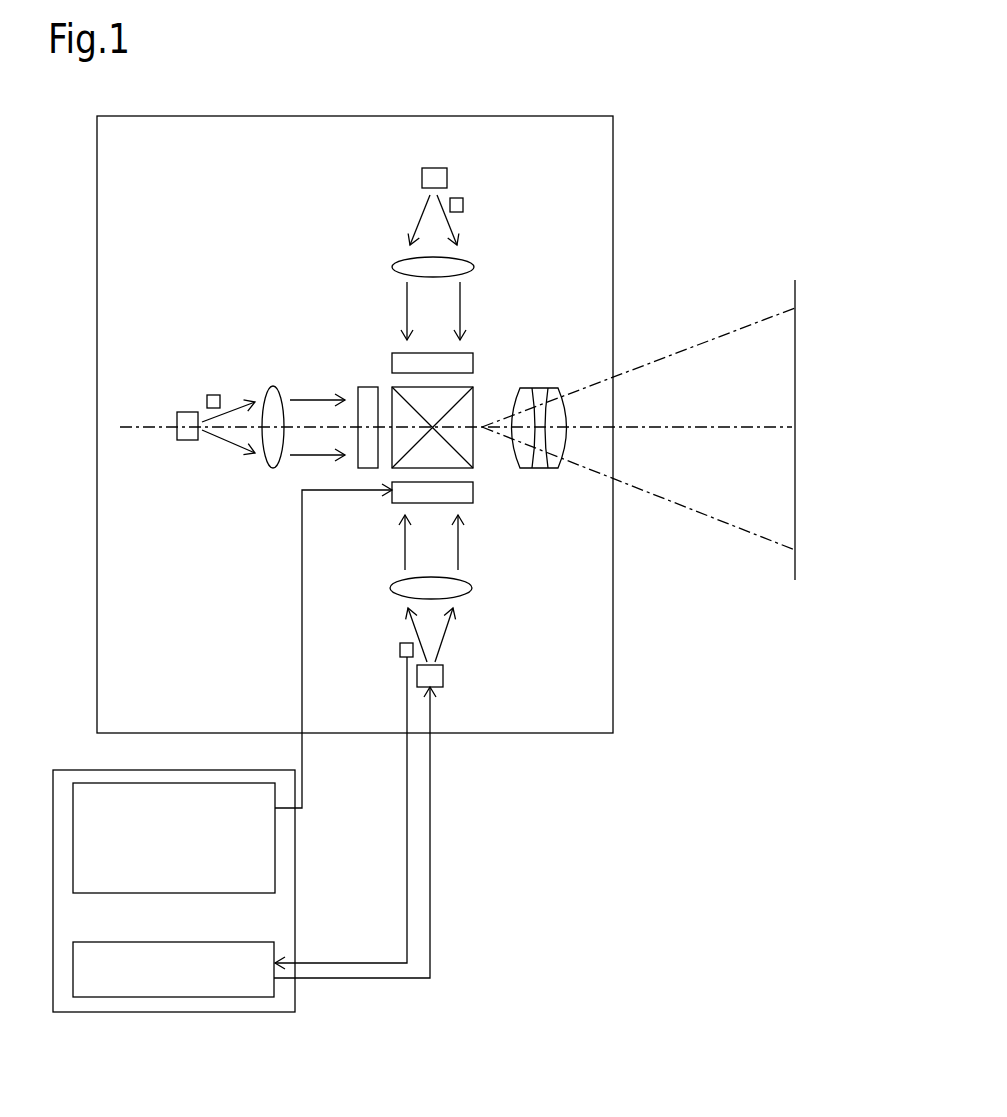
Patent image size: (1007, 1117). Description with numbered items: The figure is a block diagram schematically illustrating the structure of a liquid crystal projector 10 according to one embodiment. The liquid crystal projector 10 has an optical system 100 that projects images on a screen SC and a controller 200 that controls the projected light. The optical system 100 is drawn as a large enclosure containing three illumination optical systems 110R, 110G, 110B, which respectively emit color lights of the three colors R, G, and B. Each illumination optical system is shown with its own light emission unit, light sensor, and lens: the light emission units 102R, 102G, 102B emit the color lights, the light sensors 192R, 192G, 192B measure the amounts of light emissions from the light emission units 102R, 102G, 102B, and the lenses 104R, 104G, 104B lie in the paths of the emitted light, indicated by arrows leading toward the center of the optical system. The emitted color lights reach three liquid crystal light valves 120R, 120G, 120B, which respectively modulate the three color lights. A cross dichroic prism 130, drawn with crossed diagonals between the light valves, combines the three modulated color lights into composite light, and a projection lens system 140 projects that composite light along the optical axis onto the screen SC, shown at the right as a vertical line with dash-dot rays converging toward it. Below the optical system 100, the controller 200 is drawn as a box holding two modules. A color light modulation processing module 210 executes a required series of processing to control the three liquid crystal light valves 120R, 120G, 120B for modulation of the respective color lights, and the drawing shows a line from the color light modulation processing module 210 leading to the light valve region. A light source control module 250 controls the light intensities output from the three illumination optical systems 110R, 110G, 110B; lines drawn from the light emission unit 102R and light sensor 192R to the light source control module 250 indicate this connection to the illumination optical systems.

The liquid crystal projector 10 is at (643, 932).
The optical system 100 is at (503, 735).
The screen SC is at (795, 280).
The projection lens system 140 is at (528, 387).
The cross dichroic prism 130 is at (473, 468).
The liquid crystal light valve 120B is at (460, 352).
The liquid crystal light valve 120G is at (358, 400).
The liquid crystal light valve 120R is at (460, 503).
The illumination optical system 110B is at (440, 235).
The illumination optical system 110G is at (224, 420).
The illumination optical system 110R is at (437, 623).
The light emission unit 102B is at (422, 172).
The light emission unit 102G is at (185, 440).
The light emission unit 102R is at (443, 680).
The light sensor 192B is at (455, 198).
The light sensor 192G is at (207, 400).
The light sensor 192R is at (407, 643).
The lens 104B is at (397, 277).
The lens 104G is at (273, 467).
The lens 104R is at (400, 580).
The controller 200 is at (174, 916).
The color light modulation processing module 210 is at (203, 893).
The light source control module 250 is at (160, 942).